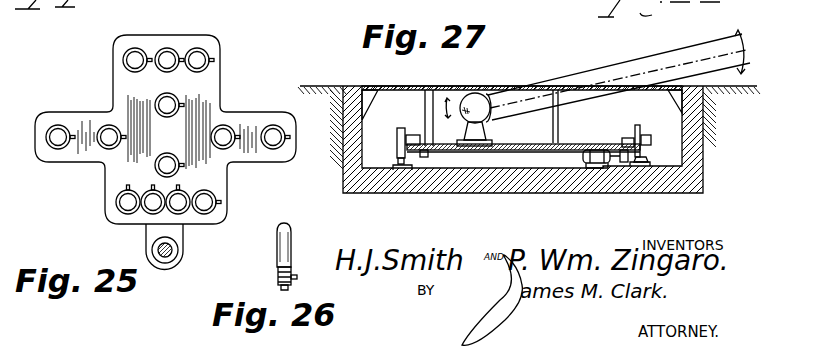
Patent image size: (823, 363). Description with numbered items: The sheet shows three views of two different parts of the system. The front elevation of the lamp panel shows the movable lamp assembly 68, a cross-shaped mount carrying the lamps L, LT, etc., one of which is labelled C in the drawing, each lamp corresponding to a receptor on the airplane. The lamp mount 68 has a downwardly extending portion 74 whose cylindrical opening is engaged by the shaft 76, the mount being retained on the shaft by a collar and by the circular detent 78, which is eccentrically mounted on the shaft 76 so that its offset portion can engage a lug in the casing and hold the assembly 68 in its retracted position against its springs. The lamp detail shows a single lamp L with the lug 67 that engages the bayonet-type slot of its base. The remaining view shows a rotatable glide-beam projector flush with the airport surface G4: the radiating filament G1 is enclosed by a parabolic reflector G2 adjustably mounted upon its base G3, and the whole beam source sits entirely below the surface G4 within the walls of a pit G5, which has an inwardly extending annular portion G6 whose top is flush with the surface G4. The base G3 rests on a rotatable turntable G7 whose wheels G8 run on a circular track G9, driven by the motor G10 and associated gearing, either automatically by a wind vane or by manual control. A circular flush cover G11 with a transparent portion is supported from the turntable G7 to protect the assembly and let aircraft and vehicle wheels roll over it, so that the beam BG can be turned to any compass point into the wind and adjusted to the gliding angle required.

In FIG. 25, the lamp assembly 68 is at (127, 88).
In FIG. 25, the center lamp C is at (167, 52).
In FIG. 25, the lamp LT is at (178, 103).
In FIG. 25, the downwardly extending portion 74 is at (148, 231).
In FIG. 25, the shaft 76 is at (168, 265).
In FIG. 25, the circular detent 78 is at (173, 250).
In FIG. 26, the lamp L is at (277, 232).
In FIG. 26, the lug 67 is at (297, 273).
In FIG. 27, the surface of the airport G4 is at (316, 86).
In FIG. 27, the pit G5 is at (690, 169).
In FIG. 27, the inwardly extending annular portion G6 is at (362, 88).
In FIG. 27, the circular flush cover G11 is at (440, 74).
In FIG. 27, the parabolic reflector G2 is at (467, 99).
In FIG. 27, the radiating filament G1 is at (487, 95).
In FIG. 27, the base G3 is at (484, 130).
In FIG. 27, the beam BG is at (646, 70).
In FIG. 27, the rotatable turntable G7 is at (601, 144).
In FIG. 27, the wheels G8 is at (642, 136).
In FIG. 27, the circular track G9 is at (646, 160).
In FIG. 27, the motor G10 is at (585, 156).